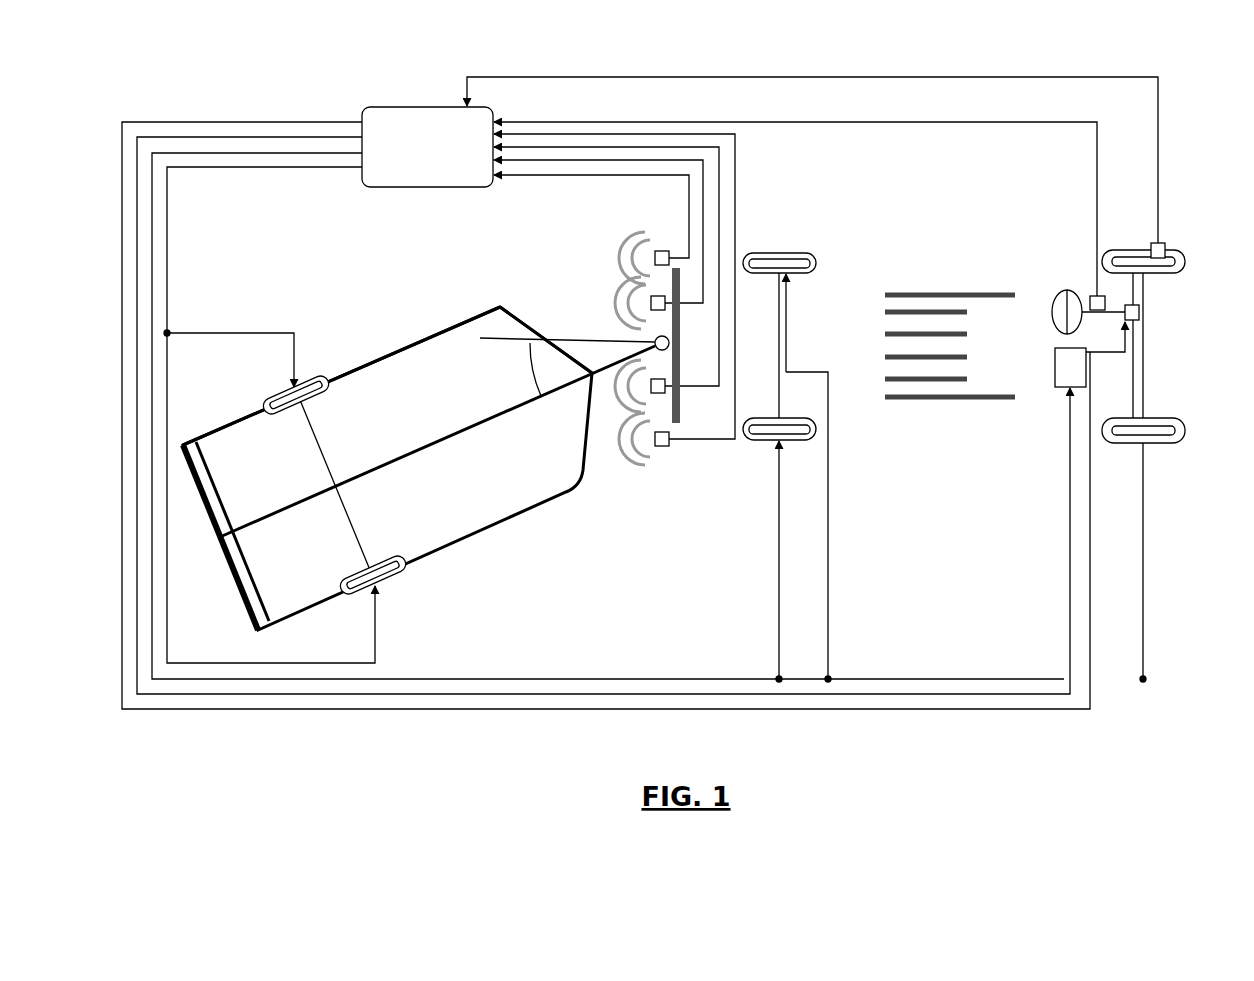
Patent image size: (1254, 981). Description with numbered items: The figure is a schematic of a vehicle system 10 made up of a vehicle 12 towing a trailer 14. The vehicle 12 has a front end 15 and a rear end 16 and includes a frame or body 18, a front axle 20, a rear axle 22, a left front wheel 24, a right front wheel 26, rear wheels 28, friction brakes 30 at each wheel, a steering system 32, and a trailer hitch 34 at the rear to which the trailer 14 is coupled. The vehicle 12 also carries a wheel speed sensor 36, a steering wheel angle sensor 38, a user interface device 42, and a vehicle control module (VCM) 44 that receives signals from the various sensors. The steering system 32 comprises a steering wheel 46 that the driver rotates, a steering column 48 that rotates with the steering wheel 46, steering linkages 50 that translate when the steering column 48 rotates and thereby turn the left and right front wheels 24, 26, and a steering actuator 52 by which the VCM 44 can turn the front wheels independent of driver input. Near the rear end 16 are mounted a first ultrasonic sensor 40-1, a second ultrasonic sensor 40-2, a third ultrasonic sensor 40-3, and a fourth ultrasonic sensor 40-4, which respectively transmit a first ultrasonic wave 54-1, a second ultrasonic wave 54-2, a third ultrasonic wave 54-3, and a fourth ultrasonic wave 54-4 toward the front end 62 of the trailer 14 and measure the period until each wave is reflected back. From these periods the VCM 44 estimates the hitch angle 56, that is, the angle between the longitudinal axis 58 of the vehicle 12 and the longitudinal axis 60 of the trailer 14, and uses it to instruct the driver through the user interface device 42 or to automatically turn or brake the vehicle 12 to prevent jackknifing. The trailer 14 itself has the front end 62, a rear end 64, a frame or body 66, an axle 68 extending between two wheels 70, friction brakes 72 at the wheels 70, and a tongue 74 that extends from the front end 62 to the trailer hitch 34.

The vehicle system 10 is at (160, 88).
The vehicle 12 is at (930, 197).
The trailer 14 is at (318, 303).
The front end 15 is at (1232, 272).
The rear end 16 is at (660, 318).
The frame or body 18 is at (871, 262).
The front axle 20 is at (1146, 369).
The rear axle 22 is at (778, 356).
The left front wheel 24 is at (1144, 252).
The right front wheel 26 is at (1153, 447).
The rear wheels 28 is at (778, 257).
The friction brakes 30 is at (793, 272).
The steering system 32 is at (1050, 276).
The trailer hitch 34 is at (658, 337).
The wheel speed sensor 36 is at (1167, 250).
The steering wheel angle sensor 38 is at (1091, 296).
The first ultrasonic sensor 40-1 is at (660, 450).
The second ultrasonic sensor 40-2 is at (654, 395).
The third ultrasonic sensor 40-3 is at (655, 295).
The fourth ultrasonic sensor 40-4 is at (657, 250).
The user interface device 42 is at (1054, 368).
The vehicle control module (VCM) 44 is at (407, 105).
The steering wheel 46 is at (1052, 315).
The steering column 48 is at (1089, 300).
The steering linkages 50 is at (1137, 297).
The steering actuator 52 is at (1125, 320).
The first ultrasonic wave 54-1 is at (630, 456).
The second ultrasonic wave 54-2 is at (619, 405).
The third ultrasonic wave 54-3 is at (621, 300).
The fourth ultrasonic wave 54-4 is at (630, 252).
The hitch angle 56 is at (522, 368).
The longitudinal axis of the vehicle 58 is at (500, 337).
The longitudinal axis of the trailer 60 is at (515, 410).
The front end 62 is at (536, 320).
The rear end 64 is at (231, 586).
The frame or body 66 is at (440, 336).
The axle 68 is at (348, 510).
The wheels 70 is at (279, 390).
The friction brakes 72 is at (316, 399).
The tongue 74 is at (578, 361).